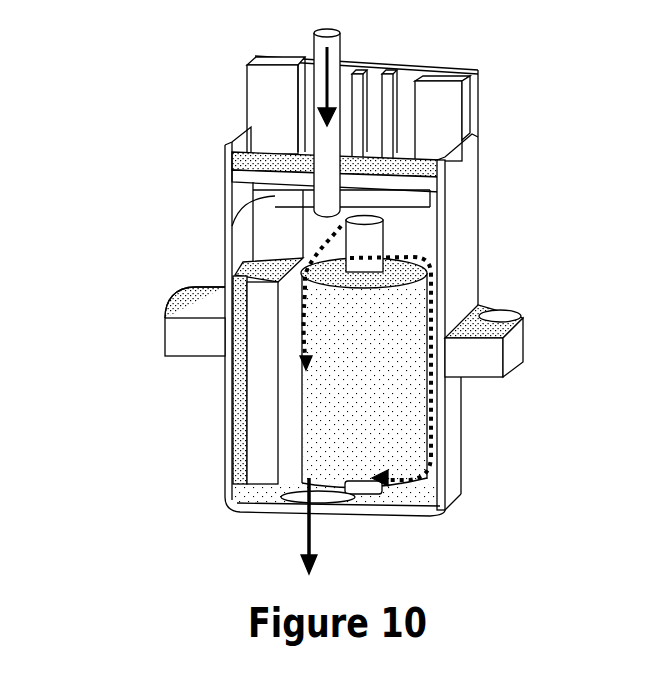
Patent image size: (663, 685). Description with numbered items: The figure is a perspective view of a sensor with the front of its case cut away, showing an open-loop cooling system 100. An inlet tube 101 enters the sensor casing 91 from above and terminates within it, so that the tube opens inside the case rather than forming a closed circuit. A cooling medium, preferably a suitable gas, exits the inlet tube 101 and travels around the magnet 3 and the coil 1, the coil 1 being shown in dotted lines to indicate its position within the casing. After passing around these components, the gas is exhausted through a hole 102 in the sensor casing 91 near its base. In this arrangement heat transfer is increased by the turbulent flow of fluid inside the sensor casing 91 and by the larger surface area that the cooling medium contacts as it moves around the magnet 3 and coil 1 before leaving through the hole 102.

The open-loop system 100 is at (93, 246).
The inlet tube 101 is at (305, 41).
The hole 102 is at (276, 494).
The magnet 3 is at (257, 417).
The coil 1 is at (388, 419).
The sensor casing 91 is at (488, 350).